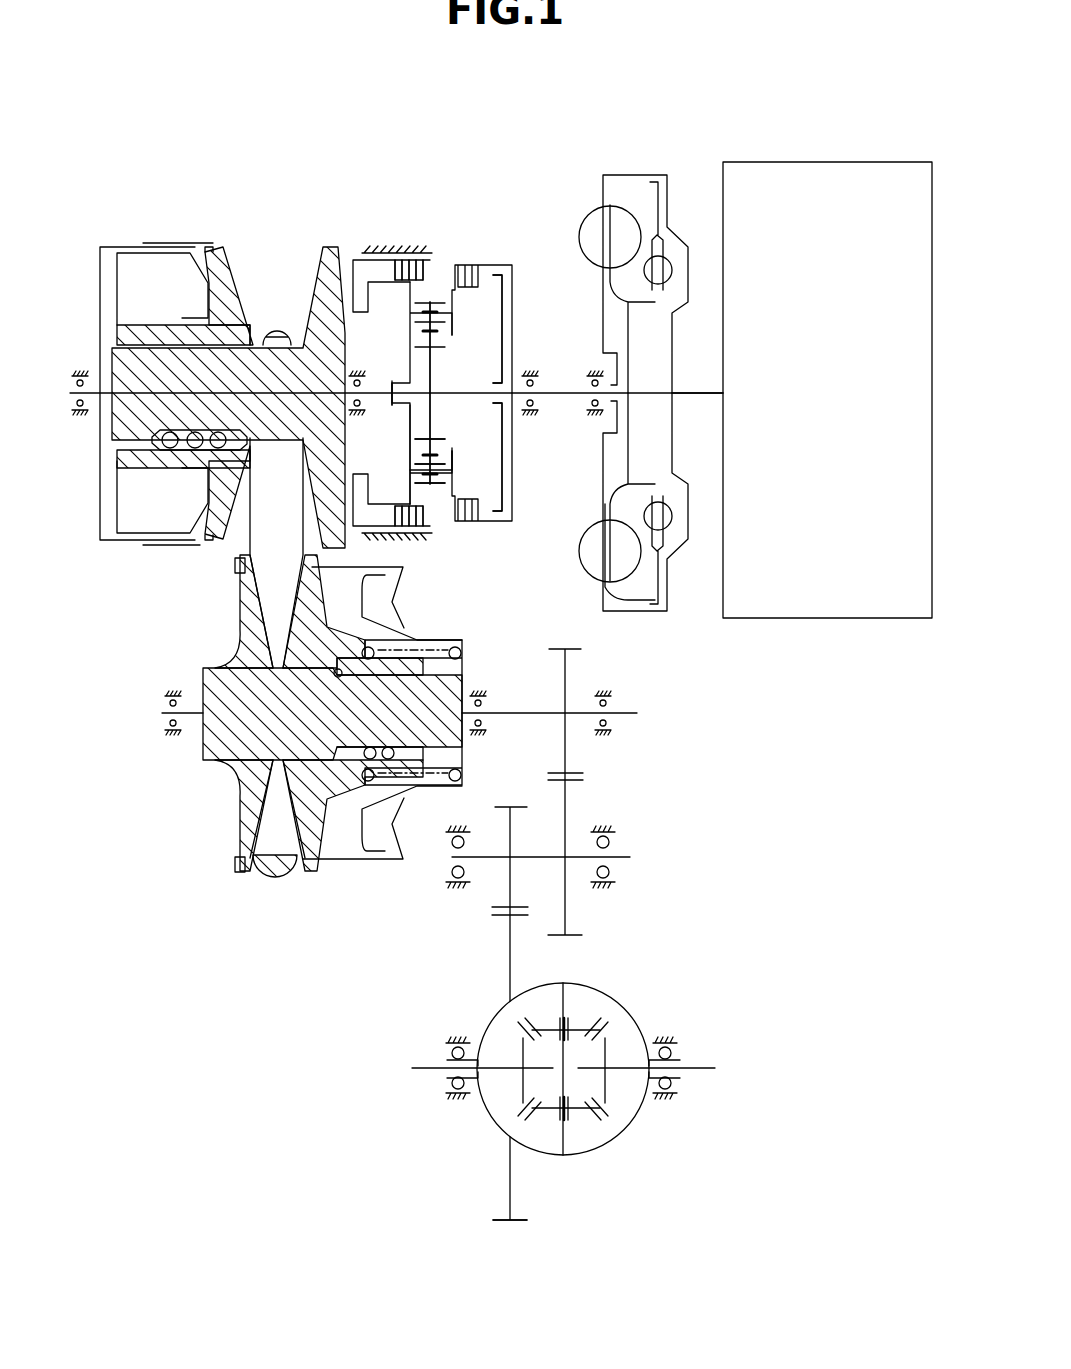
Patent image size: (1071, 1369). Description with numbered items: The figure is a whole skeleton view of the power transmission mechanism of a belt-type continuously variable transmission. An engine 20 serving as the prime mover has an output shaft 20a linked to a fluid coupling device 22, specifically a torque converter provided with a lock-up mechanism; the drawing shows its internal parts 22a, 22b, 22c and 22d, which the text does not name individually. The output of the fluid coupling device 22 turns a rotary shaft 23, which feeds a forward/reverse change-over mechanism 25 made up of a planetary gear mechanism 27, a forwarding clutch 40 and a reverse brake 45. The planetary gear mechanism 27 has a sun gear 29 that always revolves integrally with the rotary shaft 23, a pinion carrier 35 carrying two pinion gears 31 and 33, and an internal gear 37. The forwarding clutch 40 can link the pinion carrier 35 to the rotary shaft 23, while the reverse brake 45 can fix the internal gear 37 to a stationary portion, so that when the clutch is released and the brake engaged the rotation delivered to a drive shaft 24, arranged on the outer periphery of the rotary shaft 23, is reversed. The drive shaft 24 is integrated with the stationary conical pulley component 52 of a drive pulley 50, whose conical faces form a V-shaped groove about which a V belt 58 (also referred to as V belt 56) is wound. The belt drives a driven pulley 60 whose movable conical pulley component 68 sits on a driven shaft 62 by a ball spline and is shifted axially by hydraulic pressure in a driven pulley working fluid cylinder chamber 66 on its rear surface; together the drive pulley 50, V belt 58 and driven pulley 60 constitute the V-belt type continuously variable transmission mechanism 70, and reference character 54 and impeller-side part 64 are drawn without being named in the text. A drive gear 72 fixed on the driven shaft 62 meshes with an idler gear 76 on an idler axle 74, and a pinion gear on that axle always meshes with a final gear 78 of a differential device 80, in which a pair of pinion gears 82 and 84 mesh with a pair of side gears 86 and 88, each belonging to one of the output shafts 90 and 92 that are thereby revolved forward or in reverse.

The engine 20 is at (806, 162).
The output shaft 20a is at (695, 399).
The fluid coupling device 22 is at (626, 168).
The coupling hub 22a is at (622, 468).
The coupling roller 22b is at (587, 552).
The coupling plate 22c is at (620, 602).
The coupling housing 22d is at (662, 182).
The rotary shaft 23 is at (558, 393).
The drive shaft 24 is at (380, 383).
The forward/reverse change-over mechanism 25 is at (412, 218).
The planetary gear mechanism 27 is at (474, 311).
The sun gear 29 is at (430, 408).
The pinion gear 31 is at (445, 447).
The pinion gear 33 is at (440, 481).
The pinion carrier 35 is at (407, 416).
The internal gear 37 is at (433, 490).
The forwarding clutch 40 is at (483, 257).
The reverse brake 45 is at (442, 250).
The drive pulley 50 is at (234, 342).
The stationary conical pulley component 52 is at (336, 243).
The coil housing 54 is at (142, 255).
The V belt 56 is at (228, 243).
The V belt 58 is at (233, 552).
The driven pulley 60 is at (246, 892).
The driven shaft 62 is at (530, 713).
The impeller 64 is at (240, 810).
The driven pulley working fluid cylinder chamber 66 is at (350, 847).
The movable conical pulley component 68 is at (305, 867).
The V-belt type continuously variable transmission mechanism 70 is at (288, 755).
The drive gear 72 is at (553, 640).
The idler axle 74 is at (583, 857).
The idler gear 76 is at (580, 934).
The final gear 78 is at (520, 1222).
The differential device 80 is at (564, 1059).
The pinion gear 82 is at (585, 1110).
The pinion gear 84 is at (545, 1030).
The side gear 86 is at (523, 1085).
The side gear 88 is at (605, 1048).
The output shaft 90 is at (420, 1068).
The output shaft 92 is at (715, 1068).